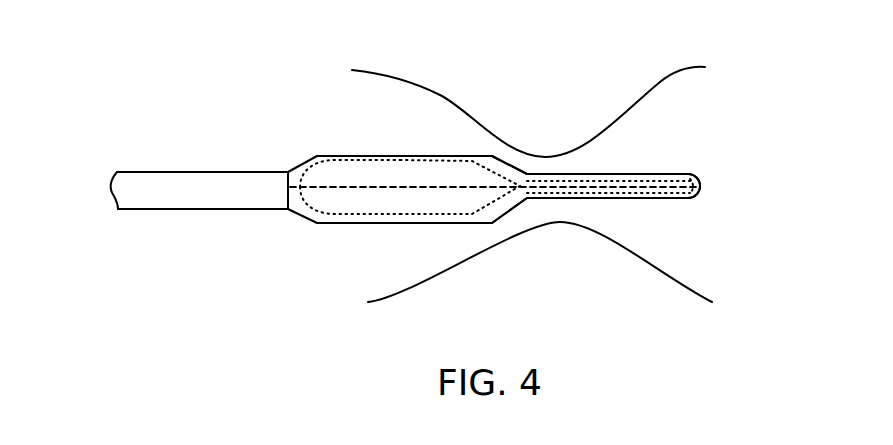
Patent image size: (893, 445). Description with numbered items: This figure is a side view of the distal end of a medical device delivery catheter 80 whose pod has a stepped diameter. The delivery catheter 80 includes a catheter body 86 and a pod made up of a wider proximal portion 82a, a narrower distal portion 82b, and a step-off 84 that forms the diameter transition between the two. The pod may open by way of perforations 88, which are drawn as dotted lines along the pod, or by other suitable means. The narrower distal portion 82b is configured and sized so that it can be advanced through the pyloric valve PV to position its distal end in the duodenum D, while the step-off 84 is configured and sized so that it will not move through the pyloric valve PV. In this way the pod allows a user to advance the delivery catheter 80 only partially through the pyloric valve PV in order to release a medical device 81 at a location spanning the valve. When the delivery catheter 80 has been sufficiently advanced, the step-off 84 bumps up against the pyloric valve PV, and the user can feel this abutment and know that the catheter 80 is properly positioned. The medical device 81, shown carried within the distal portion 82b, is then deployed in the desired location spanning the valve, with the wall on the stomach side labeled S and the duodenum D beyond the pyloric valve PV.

The medical device delivery catheter 80 is at (348, 112).
The catheter body 86 is at (230, 164).
The wider proximal portion 82a is at (346, 233).
The narrower distal portion 82b is at (648, 160).
The perforations 88 is at (427, 197).
The step-off 84 is at (518, 220).
The medical device 81 is at (611, 199).
The stenosis wall S is at (440, 103).
The duodenum D is at (668, 100).
The pyloric valve PV is at (540, 208).